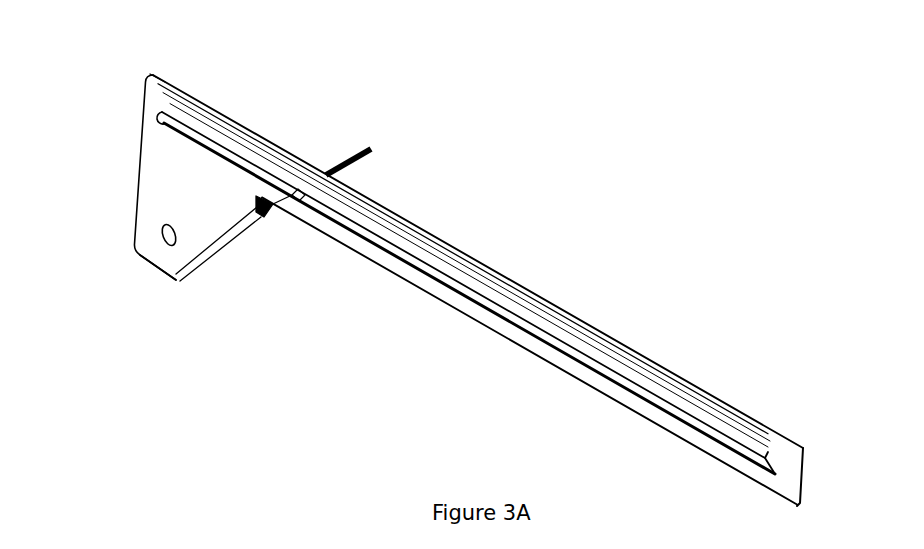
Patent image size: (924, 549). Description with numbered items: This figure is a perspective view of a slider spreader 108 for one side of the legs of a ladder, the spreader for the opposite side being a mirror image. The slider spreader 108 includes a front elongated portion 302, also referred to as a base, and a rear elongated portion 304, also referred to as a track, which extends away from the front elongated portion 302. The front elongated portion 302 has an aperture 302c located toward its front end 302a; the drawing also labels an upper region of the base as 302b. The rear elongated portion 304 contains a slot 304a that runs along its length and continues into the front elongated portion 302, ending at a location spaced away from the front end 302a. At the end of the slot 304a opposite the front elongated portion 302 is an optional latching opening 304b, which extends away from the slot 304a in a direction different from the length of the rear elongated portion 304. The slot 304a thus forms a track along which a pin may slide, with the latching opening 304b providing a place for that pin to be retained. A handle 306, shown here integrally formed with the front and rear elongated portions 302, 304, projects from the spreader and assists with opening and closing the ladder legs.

The slider spreader 108 is at (167, 28).
The front elongated portion 302 is at (175, 175).
The front end 302a is at (157, 272).
The bracket top edge 302b is at (158, 86).
The aperture 302c is at (163, 233).
The rear elongated portion 304 is at (442, 258).
The slot 304a is at (618, 385).
The latching opening 304b is at (763, 453).
The handle 306 is at (242, 240).